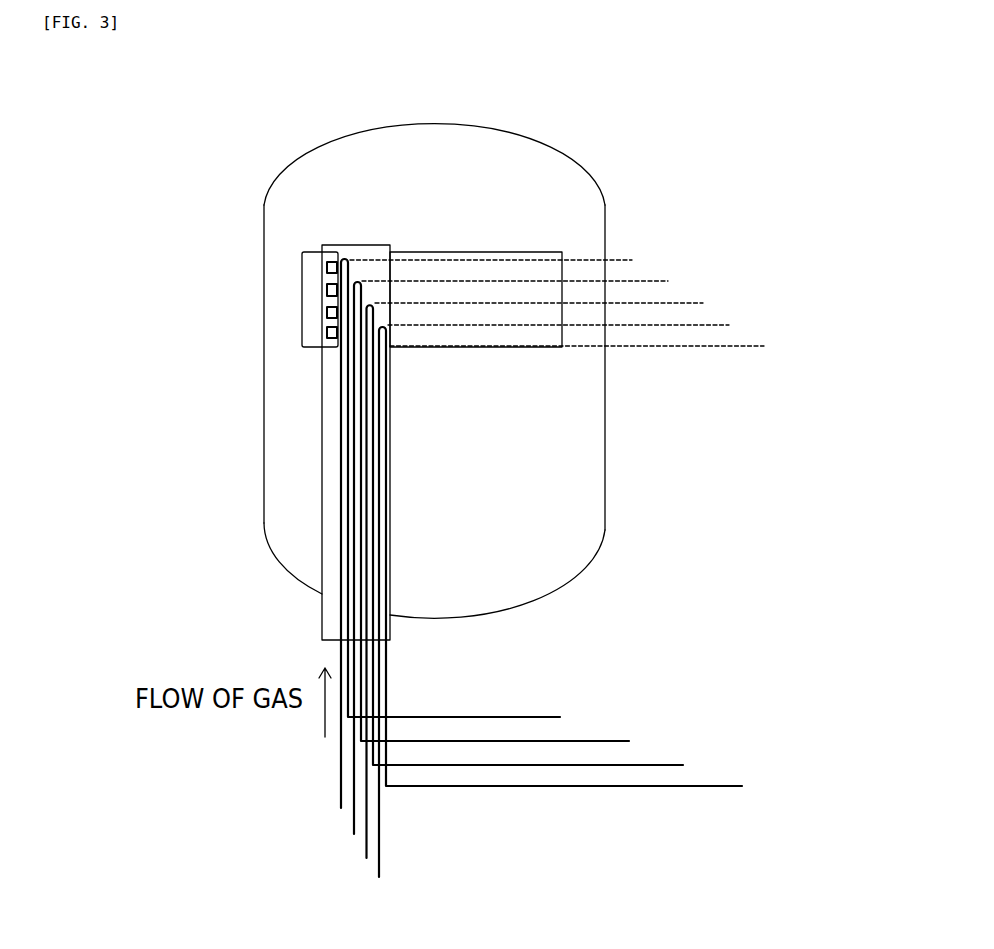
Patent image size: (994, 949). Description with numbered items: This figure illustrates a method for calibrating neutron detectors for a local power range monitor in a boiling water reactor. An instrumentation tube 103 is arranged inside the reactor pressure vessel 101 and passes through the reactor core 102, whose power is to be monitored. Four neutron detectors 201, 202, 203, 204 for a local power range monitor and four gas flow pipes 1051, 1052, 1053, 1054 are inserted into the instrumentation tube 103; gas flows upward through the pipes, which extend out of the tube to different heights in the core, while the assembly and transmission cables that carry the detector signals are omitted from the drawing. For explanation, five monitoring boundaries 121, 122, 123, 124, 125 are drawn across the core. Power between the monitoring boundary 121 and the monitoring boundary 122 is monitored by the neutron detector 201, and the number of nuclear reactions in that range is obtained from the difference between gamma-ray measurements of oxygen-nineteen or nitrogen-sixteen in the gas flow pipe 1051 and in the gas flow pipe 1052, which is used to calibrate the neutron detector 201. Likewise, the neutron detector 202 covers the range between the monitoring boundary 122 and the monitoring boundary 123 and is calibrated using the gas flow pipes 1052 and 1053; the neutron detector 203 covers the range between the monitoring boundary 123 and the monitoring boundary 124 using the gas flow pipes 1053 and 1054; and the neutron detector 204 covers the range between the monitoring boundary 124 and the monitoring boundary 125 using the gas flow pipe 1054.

The reactor pressure vessel 101 is at (601, 181).
The reactor core 102 is at (493, 252).
The instrumentation tube 103 is at (377, 245).
The monitoring boundary 121 is at (628, 260).
The monitoring boundary 122 is at (648, 281).
The monitoring boundary 123 is at (672, 303).
The monitoring boundary 124 is at (708, 325).
The monitoring boundary 125 is at (742, 347).
The neutron detector for a local power range monitor 201 is at (327, 268).
The neutron detector for a local power range monitor 202 is at (327, 290).
The neutron detector for a local power range monitor 203 is at (327, 312).
The neutron detector for a local power range monitor 204 is at (327, 337).
The gas flow pipe 1051 is at (523, 716).
The gas flow pipe 1052 is at (588, 740).
The gas flow pipe 1053 is at (652, 765).
The gas flow pipe 1054 is at (700, 785).